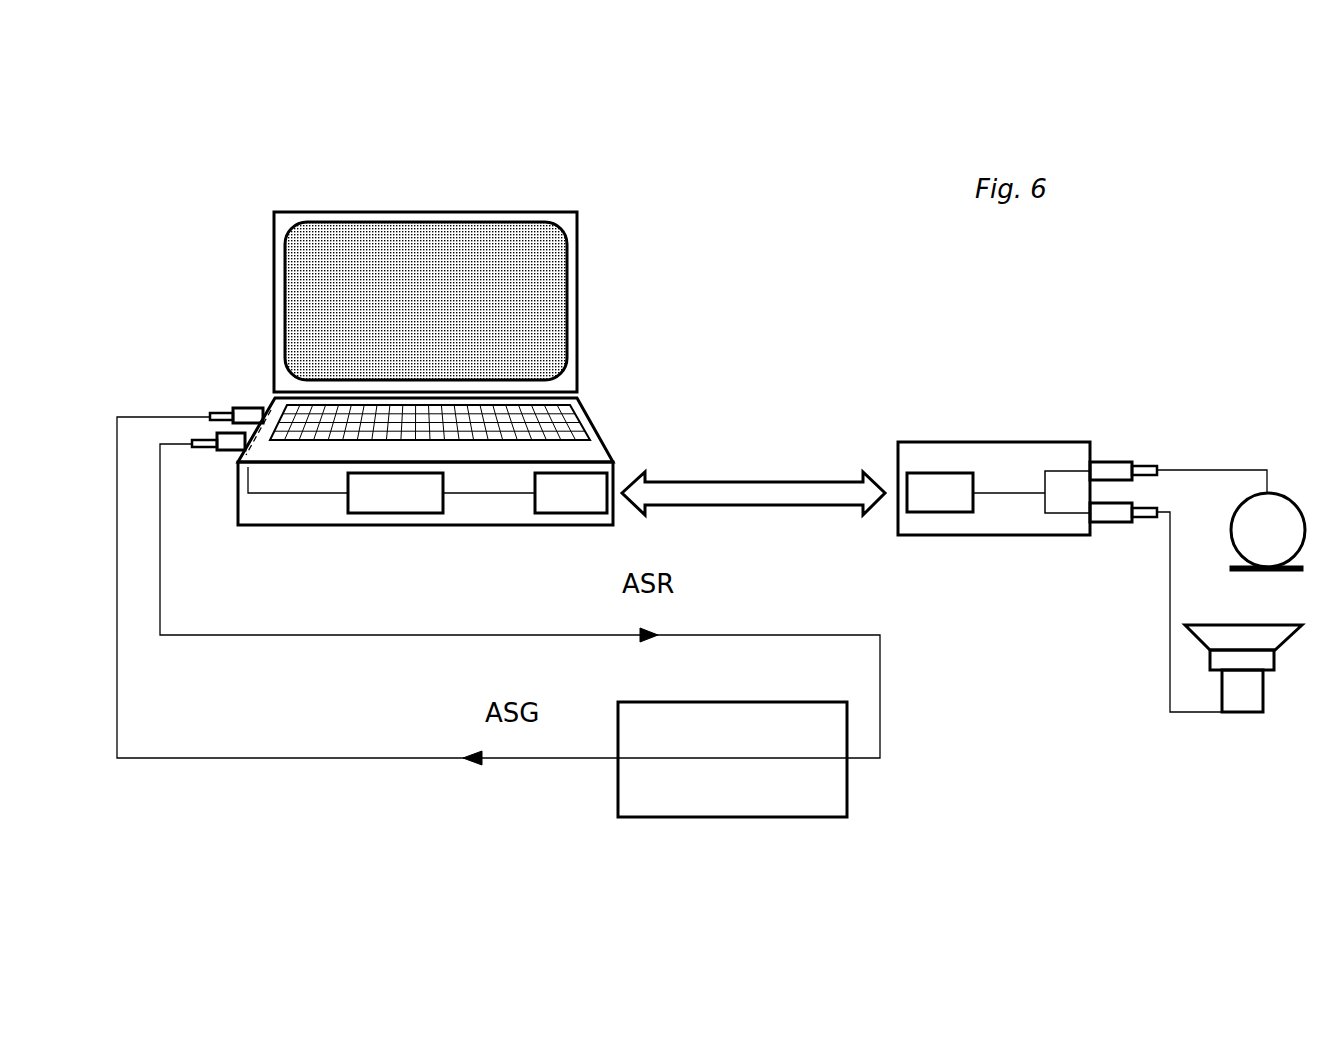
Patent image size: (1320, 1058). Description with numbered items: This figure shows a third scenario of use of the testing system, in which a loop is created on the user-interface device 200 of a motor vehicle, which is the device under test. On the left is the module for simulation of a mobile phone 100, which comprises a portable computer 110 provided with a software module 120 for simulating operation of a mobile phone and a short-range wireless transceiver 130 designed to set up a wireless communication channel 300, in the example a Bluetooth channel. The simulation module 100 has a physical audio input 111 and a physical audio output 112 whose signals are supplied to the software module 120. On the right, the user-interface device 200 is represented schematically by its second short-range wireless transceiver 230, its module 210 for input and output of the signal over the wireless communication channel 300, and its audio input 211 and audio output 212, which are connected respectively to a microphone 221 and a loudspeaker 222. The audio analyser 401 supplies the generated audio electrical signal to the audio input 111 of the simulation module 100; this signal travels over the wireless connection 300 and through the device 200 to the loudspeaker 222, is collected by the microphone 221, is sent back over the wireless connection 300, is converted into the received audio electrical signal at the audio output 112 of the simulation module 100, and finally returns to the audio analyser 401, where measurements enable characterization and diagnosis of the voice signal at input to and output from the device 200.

The module for simulation of a mobile phone 100 is at (249, 180).
The portable computer 110 is at (527, 214).
The audio input 111 is at (248, 407).
The audio output 112 is at (225, 453).
The software module 120 is at (402, 493).
The short-range wireless transceiver 130 is at (575, 493).
The user-interface device 200 is at (1033, 457).
The module for input/output of the signal 210 is at (1061, 505).
The audio input 211 is at (1117, 468).
The audio output 212 is at (1115, 523).
The microphone 221 is at (1272, 493).
The loudspeaker 222 is at (1240, 698).
The second short-range wireless transceiver 230 is at (947, 505).
The wireless communication channel 300 is at (753, 470).
The audio analyser 401 is at (720, 792).